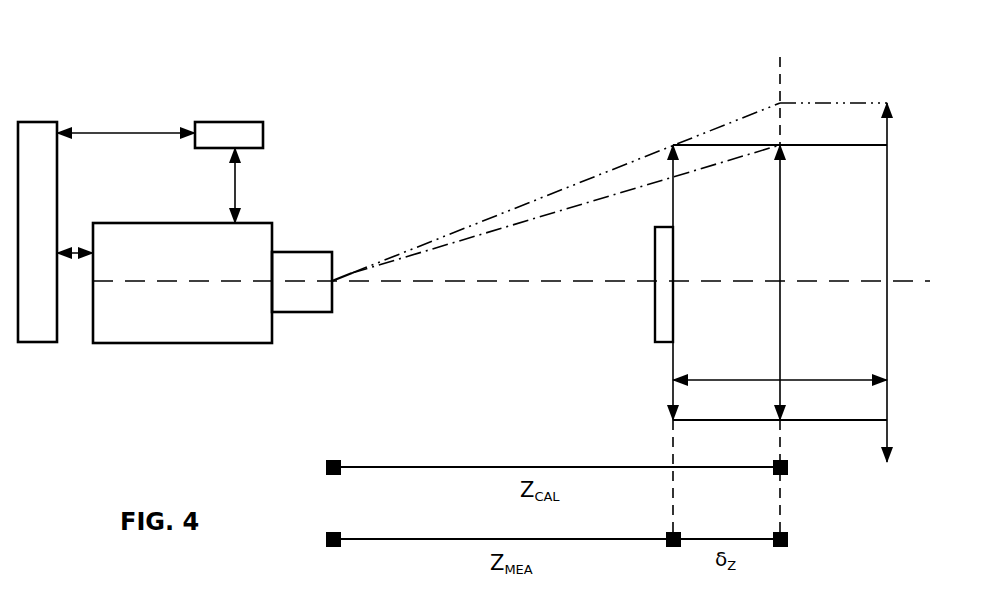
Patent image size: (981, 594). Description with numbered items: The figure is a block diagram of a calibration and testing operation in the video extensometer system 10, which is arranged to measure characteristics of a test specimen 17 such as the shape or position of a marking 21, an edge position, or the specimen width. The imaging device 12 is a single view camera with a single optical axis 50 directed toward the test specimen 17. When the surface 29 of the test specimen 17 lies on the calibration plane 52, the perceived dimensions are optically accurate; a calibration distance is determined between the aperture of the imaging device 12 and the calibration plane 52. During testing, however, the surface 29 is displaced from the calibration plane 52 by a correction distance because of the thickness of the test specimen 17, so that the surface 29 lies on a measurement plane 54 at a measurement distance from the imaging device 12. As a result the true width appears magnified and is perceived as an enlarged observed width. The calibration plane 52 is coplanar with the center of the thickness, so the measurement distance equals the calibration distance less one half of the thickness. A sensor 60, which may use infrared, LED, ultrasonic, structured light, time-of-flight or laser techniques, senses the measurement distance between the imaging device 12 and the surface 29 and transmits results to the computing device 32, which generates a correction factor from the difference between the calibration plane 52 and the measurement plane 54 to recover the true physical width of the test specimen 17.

The video extensometer system 10 is at (298, 48).
The imaging device 12 is at (213, 223).
The test specimen 17 is at (850, 420).
The marking 21 is at (655, 337).
The surface 29 is at (673, 388).
The computing device 32 is at (57, 122).
The optical axis 50 is at (430, 281).
The calibration plane 52 is at (780, 57).
The measurement plane 54 is at (673, 512).
The sensor 60 is at (195, 122).